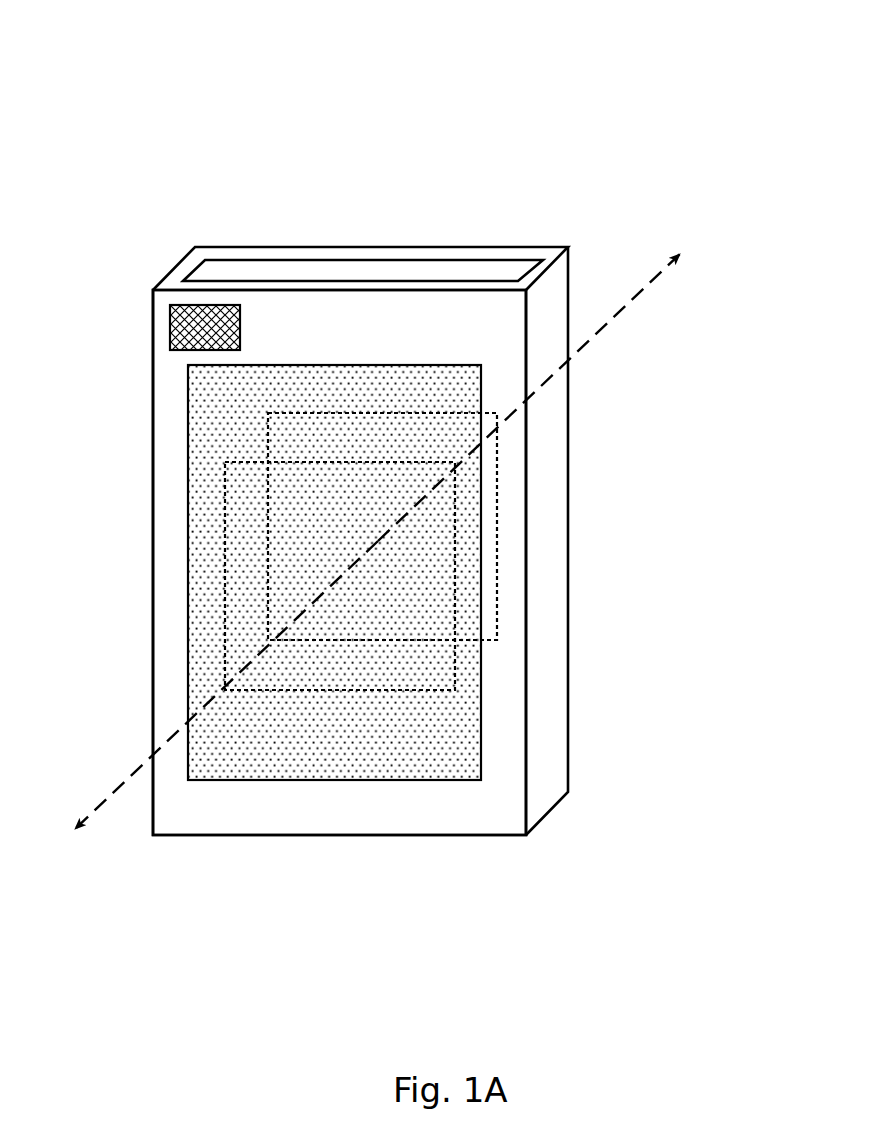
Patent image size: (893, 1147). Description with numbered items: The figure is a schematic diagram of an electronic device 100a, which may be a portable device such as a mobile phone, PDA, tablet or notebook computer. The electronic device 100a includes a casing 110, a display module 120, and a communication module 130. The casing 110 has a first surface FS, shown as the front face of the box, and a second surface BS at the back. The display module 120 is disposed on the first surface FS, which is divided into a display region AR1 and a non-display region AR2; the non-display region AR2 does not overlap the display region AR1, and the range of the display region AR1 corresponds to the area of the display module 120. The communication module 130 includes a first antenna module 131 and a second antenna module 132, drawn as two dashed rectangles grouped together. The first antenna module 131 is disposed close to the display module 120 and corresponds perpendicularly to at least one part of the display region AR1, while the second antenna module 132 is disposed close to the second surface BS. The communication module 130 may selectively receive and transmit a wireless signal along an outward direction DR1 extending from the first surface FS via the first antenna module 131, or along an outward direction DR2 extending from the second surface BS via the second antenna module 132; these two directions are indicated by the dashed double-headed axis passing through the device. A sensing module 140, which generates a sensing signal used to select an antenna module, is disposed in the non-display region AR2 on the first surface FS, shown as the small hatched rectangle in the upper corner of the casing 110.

The electronic device 100a is at (117, 48).
The casing 110 is at (168, 280).
The display module 120 is at (443, 742).
The communication module 130 is at (499, 551).
The first antenna module 131 is at (458, 677).
The second antenna module 132 is at (500, 603).
The sensing module 140 is at (188, 329).
The first surface FS is at (530, 452).
The second surface BS is at (572, 507).
The outward direction DR1 is at (123, 780).
The outward direction DR2 is at (571, 359).
The display region AR1 is at (330, 740).
The non-display region AR2 is at (330, 810).